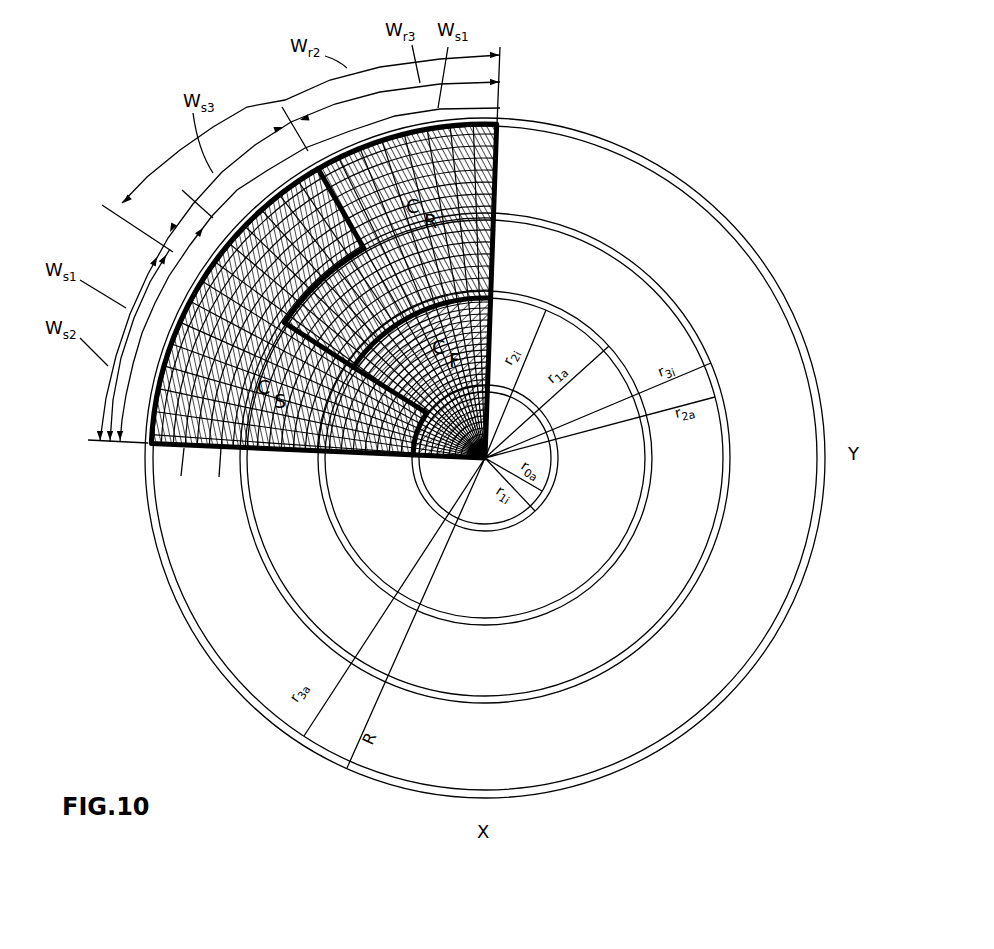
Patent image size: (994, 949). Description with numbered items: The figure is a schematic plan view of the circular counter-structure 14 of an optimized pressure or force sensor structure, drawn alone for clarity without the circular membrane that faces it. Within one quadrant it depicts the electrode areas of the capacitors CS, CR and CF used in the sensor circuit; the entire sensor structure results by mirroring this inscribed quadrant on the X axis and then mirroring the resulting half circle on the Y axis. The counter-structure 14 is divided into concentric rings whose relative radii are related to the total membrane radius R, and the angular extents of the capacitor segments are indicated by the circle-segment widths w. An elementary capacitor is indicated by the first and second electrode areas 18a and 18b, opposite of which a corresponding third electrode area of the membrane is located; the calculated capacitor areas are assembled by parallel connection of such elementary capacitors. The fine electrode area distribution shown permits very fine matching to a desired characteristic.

The counter-structure 14 is at (710, 190).
The first electrode area 18a is at (175, 476).
The second electrode area 18b is at (217, 476).